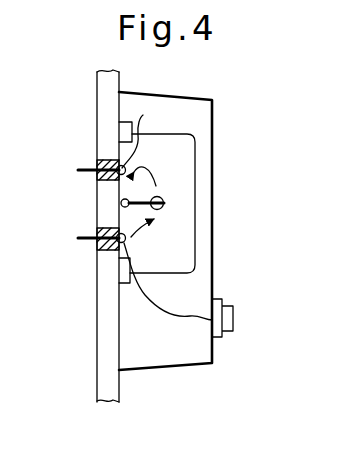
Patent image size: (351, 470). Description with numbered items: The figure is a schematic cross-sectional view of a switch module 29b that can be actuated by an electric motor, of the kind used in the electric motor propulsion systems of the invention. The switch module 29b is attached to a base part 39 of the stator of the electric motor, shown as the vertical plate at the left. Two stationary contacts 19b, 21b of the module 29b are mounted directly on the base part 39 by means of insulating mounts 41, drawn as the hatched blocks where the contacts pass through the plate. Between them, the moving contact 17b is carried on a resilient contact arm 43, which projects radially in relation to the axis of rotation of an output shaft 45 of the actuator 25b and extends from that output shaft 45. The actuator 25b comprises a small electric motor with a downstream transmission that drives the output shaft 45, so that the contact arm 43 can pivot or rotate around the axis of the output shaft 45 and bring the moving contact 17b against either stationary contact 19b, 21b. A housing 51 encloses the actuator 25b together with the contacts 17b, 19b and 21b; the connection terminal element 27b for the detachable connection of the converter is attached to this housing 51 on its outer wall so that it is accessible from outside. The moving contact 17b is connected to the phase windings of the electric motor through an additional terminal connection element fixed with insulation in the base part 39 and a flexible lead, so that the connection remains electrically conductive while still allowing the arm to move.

The base part 39 is at (104, 353).
The switch module 29b is at (214, 121).
The actuator 25b is at (199, 227).
The insulating mount 41 is at (100, 157).
The output shaft 45 is at (108, 217).
The stationary contact 19b is at (154, 134).
The resilient contact arm 43 is at (156, 184).
The moving contact 17b is at (162, 203).
The stationary contact 21b is at (124, 240).
The connection terminal element 27b is at (234, 321).
The housing 51 is at (190, 371).